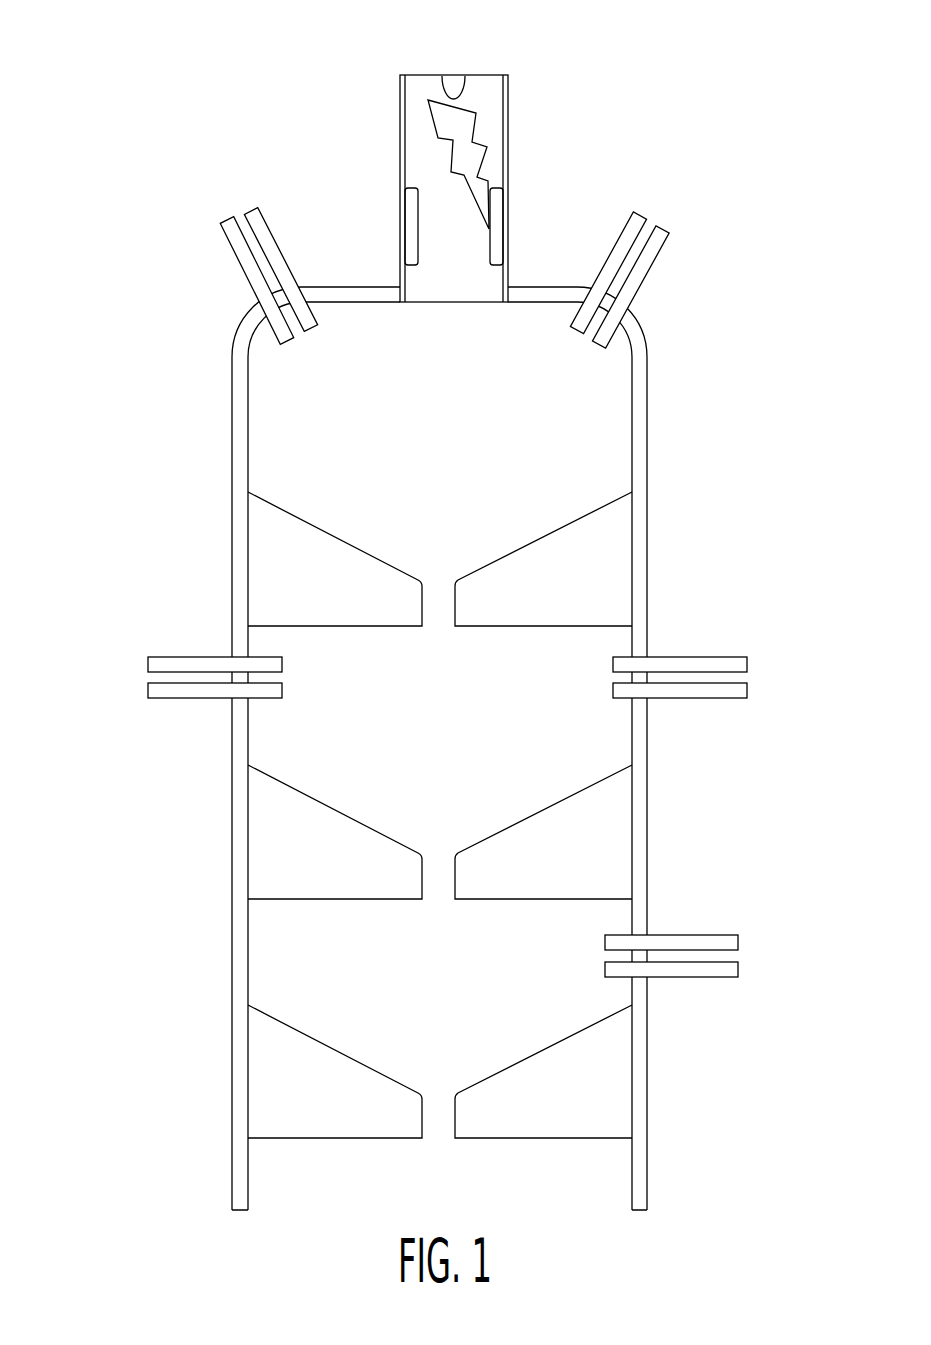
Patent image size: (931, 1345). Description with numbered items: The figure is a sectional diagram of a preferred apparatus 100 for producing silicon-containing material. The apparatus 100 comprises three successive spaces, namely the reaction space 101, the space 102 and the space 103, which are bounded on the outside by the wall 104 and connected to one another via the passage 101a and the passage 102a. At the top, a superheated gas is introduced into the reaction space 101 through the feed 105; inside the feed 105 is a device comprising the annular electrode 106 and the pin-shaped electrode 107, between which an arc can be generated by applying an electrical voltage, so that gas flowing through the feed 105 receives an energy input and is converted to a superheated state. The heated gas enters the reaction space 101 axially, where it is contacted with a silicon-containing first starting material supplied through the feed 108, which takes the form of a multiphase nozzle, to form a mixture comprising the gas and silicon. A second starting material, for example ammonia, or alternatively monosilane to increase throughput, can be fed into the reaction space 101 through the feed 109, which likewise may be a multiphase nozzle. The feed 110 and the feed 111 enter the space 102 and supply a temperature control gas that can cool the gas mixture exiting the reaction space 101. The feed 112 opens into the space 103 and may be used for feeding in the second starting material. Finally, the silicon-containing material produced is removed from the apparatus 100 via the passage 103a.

The apparatus 100 is at (160, 92).
The reaction space 101 is at (572, 397).
The passage 101a is at (437, 605).
The space 102 is at (582, 733).
The passage 102a is at (440, 878).
The space 103 is at (275, 963).
The passage 103a is at (437, 1115).
The wall 104 is at (232, 392).
The feed 105 is at (415, 107).
The annular electrode 106 is at (407, 223).
The pin-shaped electrode 107 is at (453, 77).
The feed 108 is at (220, 223).
The feed 109 is at (648, 227).
The feed 110 is at (710, 657).
The feed 111 is at (163, 657).
The feed 112 is at (710, 935).